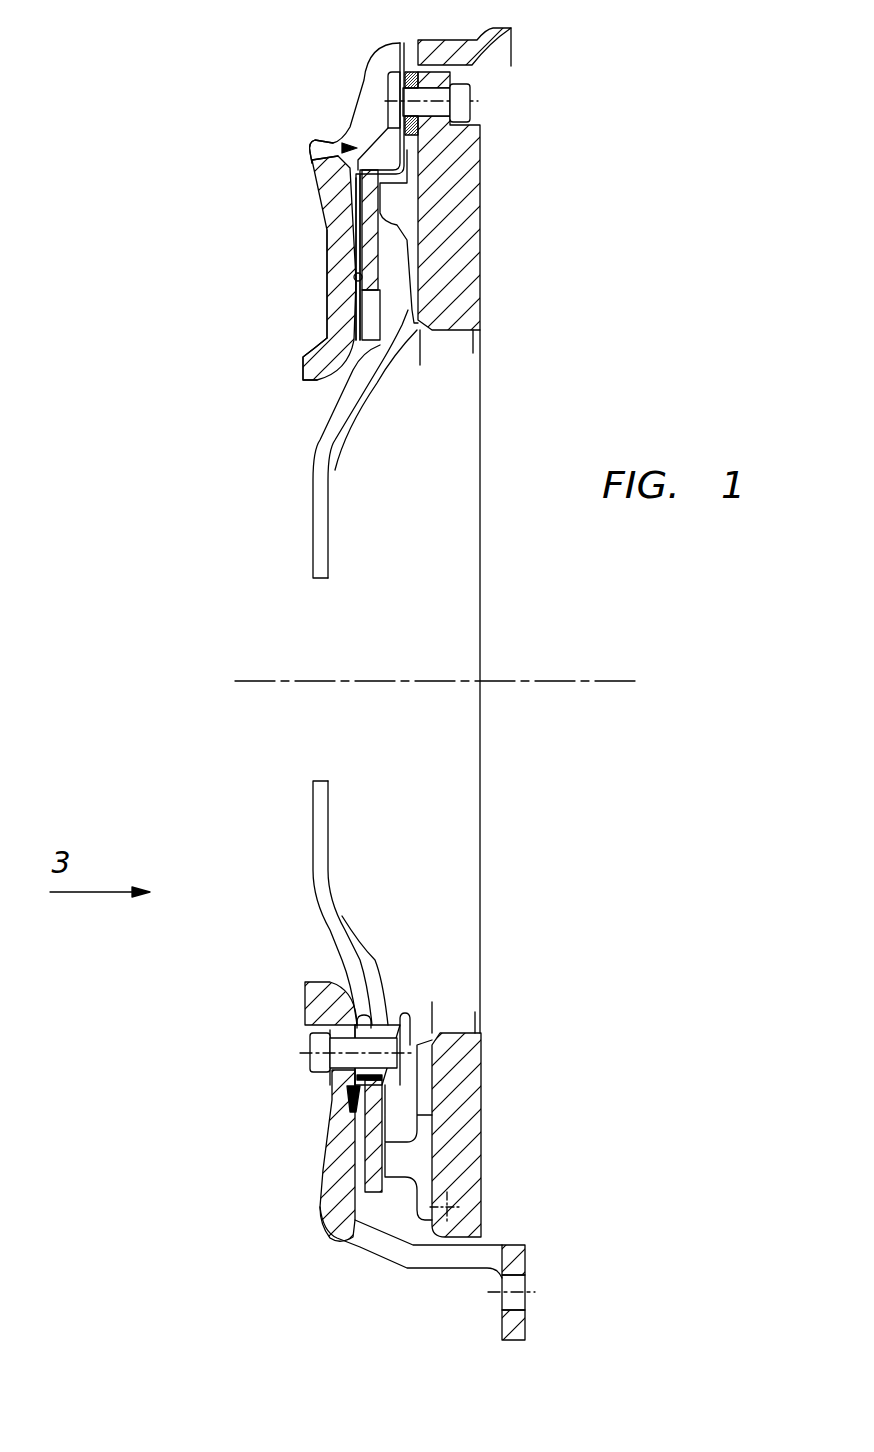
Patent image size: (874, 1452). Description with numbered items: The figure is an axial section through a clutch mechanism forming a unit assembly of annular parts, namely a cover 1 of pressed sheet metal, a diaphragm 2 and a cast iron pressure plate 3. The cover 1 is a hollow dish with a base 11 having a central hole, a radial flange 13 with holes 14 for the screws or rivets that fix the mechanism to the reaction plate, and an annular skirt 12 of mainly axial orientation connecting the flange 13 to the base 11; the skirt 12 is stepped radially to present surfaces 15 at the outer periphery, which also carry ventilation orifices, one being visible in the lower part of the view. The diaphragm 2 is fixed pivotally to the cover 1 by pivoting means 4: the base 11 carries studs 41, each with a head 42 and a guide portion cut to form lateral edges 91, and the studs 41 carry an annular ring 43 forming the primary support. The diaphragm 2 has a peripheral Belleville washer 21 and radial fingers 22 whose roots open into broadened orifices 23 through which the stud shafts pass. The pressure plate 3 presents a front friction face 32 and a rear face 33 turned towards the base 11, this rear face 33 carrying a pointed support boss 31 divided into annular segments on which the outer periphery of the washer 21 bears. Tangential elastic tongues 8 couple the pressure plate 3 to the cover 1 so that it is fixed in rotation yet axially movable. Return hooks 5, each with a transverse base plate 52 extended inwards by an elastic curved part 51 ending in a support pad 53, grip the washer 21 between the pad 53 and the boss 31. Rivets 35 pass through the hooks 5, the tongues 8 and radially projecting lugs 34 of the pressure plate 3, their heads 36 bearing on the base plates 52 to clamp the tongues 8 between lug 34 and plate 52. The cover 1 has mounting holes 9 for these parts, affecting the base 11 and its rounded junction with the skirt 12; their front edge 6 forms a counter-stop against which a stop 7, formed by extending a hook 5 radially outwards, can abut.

The cover 1 is at (302, 1213).
The diaphragm 2 is at (344, 1176).
The pressure plate 3 is at (508, 1143).
The pivoting means 4 is at (292, 1040).
The return hook 5 is at (344, 147).
The front edge 6 is at (453, 40).
The stop 7 is at (400, 63).
The tangential elastic tongue 8 is at (418, 134).
The mounting hole 9 is at (310, 158).
The base 11 is at (303, 357).
The annular skirt 12 is at (367, 1250).
The radial flange 13 is at (522, 1250).
The hole 14 is at (522, 1276).
The surface 15 is at (477, 40).
The Belleville washer 21 is at (327, 298).
The radial finger 22 is at (314, 840).
The broadened orifice 23 is at (357, 1025).
The support boss 31 is at (362, 212).
The front friction face 32 is at (479, 222).
The rear face 33 is at (330, 440).
The lug 34 is at (442, 78).
The fixing component 35 is at (468, 108).
The head 36 is at (388, 100).
The stud 41 is at (348, 1091).
The head 42 is at (400, 1082).
The annular ring 43 is at (357, 1098).
The curved part 51 is at (345, 175).
The base plate 52 is at (418, 134).
The support pad 53 is at (356, 192).
The lateral edge 91 is at (355, 1040).